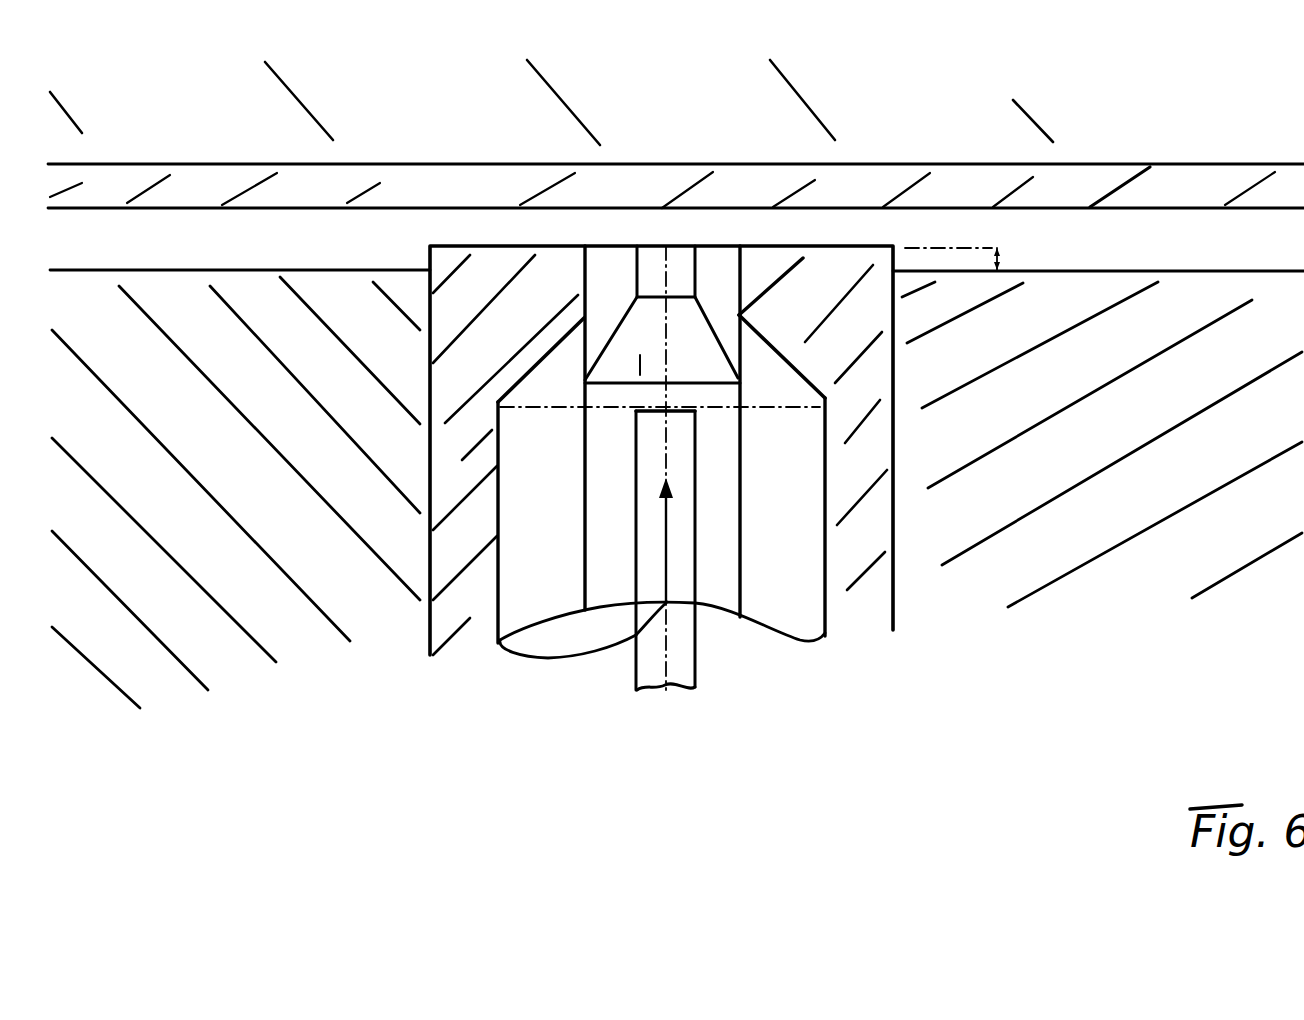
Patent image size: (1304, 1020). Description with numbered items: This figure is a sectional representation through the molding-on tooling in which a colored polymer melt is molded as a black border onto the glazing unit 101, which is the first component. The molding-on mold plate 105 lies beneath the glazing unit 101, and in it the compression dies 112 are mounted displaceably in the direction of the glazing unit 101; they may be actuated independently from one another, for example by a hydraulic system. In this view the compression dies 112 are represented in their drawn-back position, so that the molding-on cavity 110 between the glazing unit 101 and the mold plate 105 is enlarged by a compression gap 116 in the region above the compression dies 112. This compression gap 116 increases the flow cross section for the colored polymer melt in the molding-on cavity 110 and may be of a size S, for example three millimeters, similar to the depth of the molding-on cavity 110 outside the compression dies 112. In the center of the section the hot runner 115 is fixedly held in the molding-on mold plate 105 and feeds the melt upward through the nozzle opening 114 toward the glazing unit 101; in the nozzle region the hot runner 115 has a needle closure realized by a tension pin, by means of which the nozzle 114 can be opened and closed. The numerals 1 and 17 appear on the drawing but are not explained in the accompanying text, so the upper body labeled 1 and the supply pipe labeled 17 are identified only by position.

The body 1 is at (440, 137).
The glazing unit 101 is at (348, 200).
The molding-on cavity 110 is at (828, 233).
The compression dies 112 is at (168, 387).
The molding-on mold plate 105 is at (878, 372).
The nozzle opening 114 is at (666, 252).
The hot runner 115 is at (806, 547).
The supply pipe 17 is at (690, 640).
The compression gap 116 is at (905, 262).
The size of compression gap S is at (1003, 258).